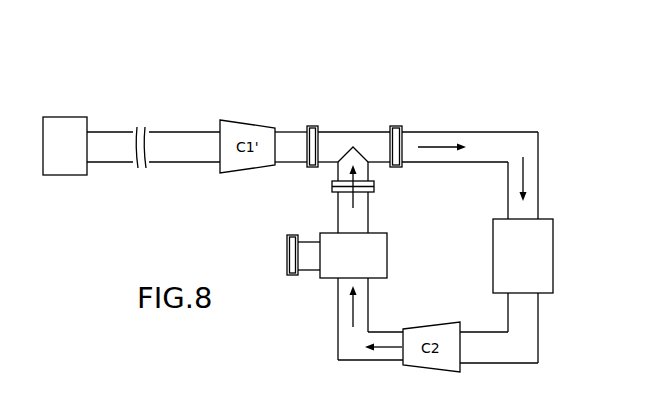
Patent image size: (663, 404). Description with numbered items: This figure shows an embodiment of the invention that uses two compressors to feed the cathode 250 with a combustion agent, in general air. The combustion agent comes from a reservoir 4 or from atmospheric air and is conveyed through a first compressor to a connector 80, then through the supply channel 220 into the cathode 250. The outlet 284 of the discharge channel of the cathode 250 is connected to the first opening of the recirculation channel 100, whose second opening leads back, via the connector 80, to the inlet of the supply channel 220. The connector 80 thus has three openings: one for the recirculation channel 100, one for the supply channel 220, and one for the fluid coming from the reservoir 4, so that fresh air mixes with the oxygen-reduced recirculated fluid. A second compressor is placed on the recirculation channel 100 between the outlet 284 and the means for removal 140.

The reservoir 4 is at (65, 146).
The connector 80 is at (363, 142).
The recirculation channel 100 is at (342, 348).
The means for removal 140 is at (337, 255).
The supply channel 220 is at (507, 132).
The cathode 250 is at (523, 256).
The outlet of the discharge channel 284 is at (545, 302).